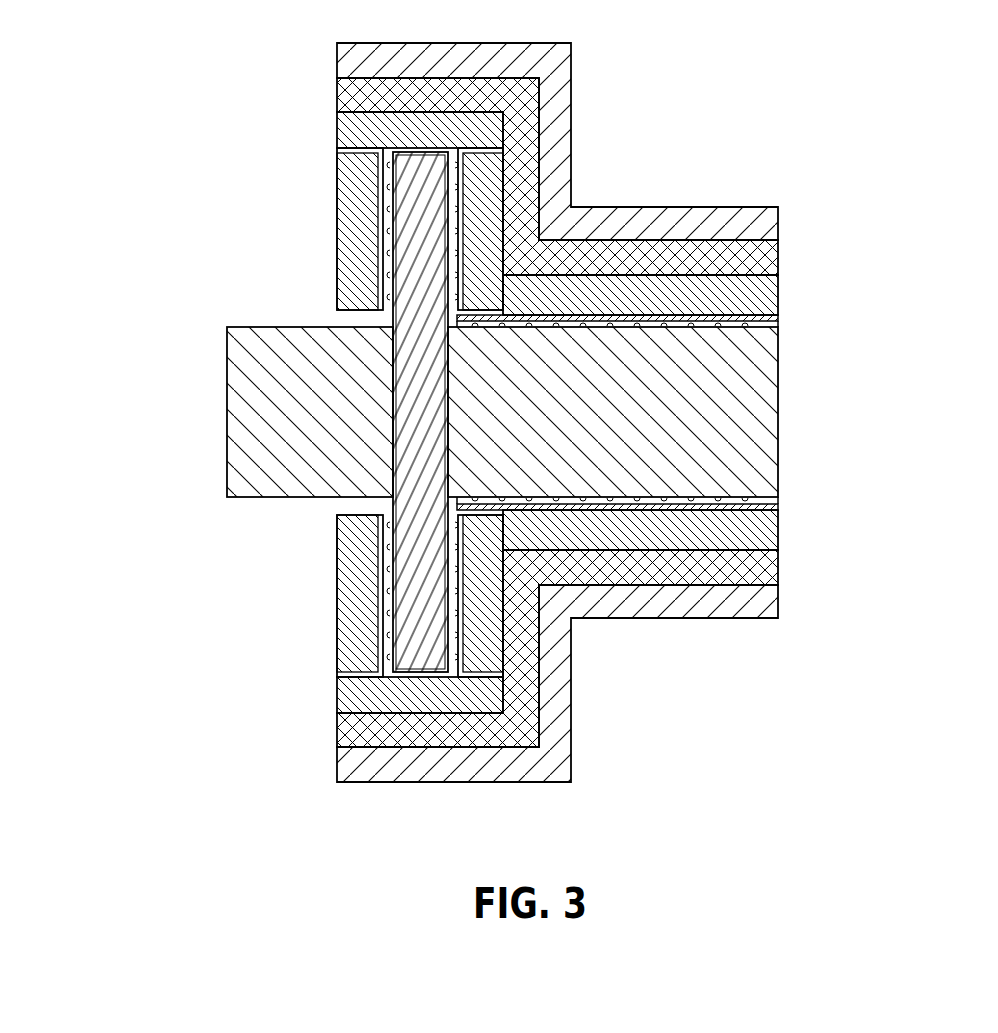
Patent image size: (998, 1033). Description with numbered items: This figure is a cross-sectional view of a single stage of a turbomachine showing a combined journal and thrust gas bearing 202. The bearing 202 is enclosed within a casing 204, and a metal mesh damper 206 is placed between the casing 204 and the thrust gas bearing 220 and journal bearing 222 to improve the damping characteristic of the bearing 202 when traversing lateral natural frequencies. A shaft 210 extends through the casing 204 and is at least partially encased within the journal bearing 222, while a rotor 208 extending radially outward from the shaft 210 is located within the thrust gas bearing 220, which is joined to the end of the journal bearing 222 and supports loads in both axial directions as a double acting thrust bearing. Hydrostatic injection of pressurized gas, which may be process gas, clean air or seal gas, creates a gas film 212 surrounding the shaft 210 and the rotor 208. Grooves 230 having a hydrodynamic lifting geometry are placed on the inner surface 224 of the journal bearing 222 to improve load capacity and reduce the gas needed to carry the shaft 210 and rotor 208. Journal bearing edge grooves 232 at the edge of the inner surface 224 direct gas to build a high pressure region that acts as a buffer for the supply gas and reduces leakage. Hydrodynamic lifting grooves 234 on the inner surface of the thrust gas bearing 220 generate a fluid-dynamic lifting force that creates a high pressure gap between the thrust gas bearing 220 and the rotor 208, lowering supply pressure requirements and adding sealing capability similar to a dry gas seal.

The bearing 202 is at (172, 245).
The casing 204 is at (563, 124).
The metal mesh damper 206 is at (667, 248).
The rotor 208 is at (415, 425).
The shaft 210 is at (650, 462).
The gas film 212 is at (756, 333).
The thrust gas bearing 220 is at (353, 198).
The journal bearing 222 is at (710, 297).
The inner surface 224 is at (568, 524).
The grooves 230 is at (594, 327).
The journal bearing edge grooves 232 is at (788, 500).
The hydrodynamic lifting grooves 234 is at (368, 621).